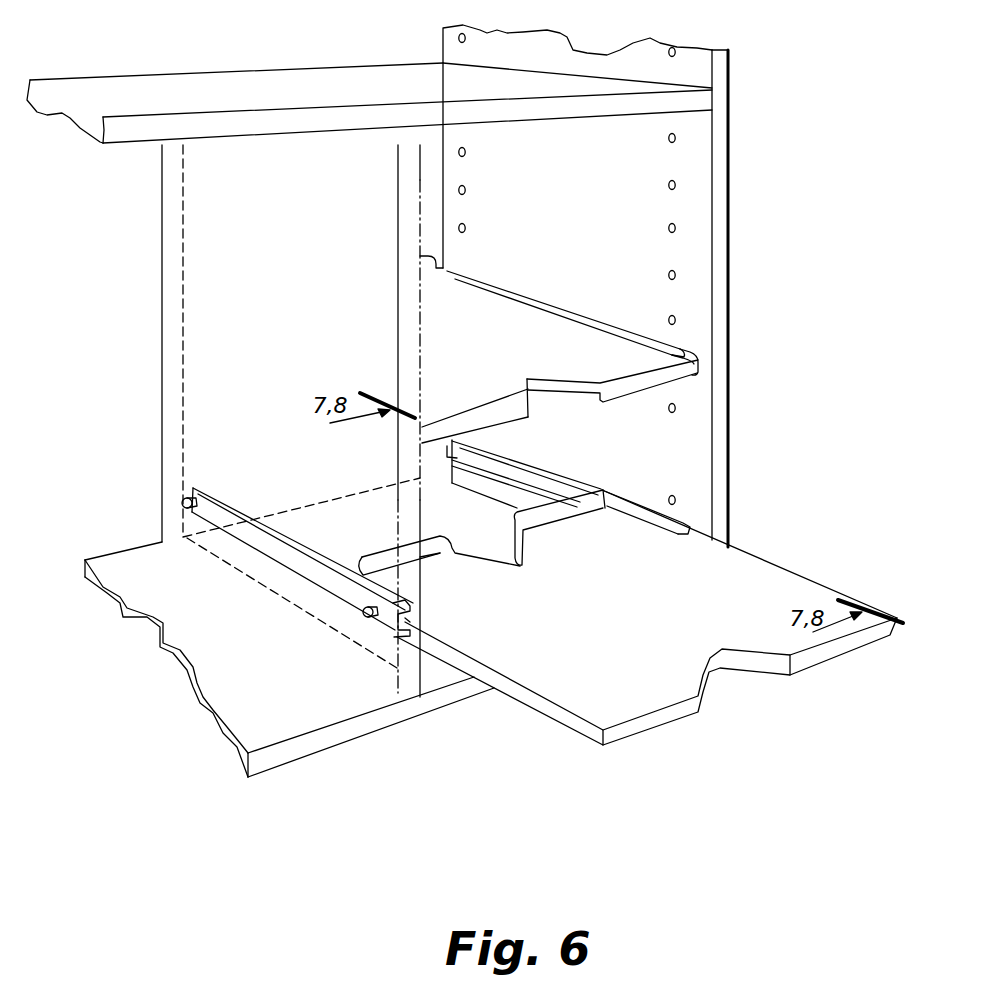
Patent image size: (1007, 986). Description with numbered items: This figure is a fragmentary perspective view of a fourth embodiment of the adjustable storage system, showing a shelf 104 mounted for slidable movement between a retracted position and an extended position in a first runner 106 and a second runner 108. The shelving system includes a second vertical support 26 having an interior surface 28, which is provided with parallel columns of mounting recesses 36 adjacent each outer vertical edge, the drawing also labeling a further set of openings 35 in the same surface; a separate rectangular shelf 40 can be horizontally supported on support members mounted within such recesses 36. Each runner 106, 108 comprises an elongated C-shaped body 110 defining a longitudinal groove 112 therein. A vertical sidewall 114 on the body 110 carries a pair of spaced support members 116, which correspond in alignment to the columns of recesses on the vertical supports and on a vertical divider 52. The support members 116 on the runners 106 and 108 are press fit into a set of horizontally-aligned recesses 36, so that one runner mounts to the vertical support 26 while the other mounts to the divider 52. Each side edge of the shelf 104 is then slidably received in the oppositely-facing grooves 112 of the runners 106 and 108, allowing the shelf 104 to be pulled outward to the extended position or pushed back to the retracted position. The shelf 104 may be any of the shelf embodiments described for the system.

The shelf 40 is at (367, 80).
The interior surface 28 is at (605, 265).
The second vertical support 26 is at (733, 378).
The mounting holes 35 is at (466, 226).
The mounting recesses 36 is at (668, 226).
The C-shaped body 110 is at (623, 330).
The vertical divider 52 is at (399, 338).
The second runner 108 is at (575, 483).
The first runner 106 is at (325, 600).
The vertical sidewall 114 is at (292, 565).
The longitudinal groove 112 is at (410, 625).
The support members 116 is at (182, 505).
The shelf 104 is at (447, 672).